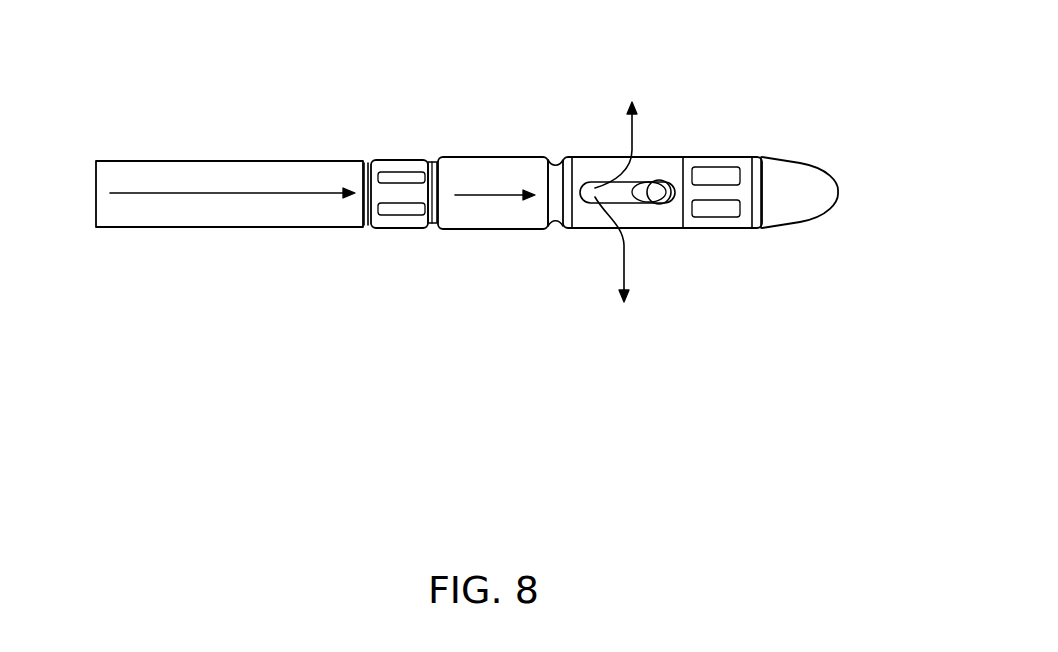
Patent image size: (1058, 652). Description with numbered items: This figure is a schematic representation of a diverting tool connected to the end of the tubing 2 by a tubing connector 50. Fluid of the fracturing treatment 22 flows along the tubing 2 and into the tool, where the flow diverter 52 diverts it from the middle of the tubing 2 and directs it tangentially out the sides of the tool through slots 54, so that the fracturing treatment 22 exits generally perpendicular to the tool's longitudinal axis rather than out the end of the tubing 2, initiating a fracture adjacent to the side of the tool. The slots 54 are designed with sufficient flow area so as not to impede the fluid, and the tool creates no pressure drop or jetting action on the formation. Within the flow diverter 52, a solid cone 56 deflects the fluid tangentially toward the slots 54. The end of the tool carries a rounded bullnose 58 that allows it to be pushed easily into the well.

The tubing 2 is at (157, 161).
The fracturing treatment 22 is at (170, 193).
The tubing connector 50 is at (400, 162).
The flow diverter 52 is at (648, 162).
The slots 54 is at (618, 195).
The solid cone 56 is at (656, 190).
The rounded bullnose 58 is at (787, 188).